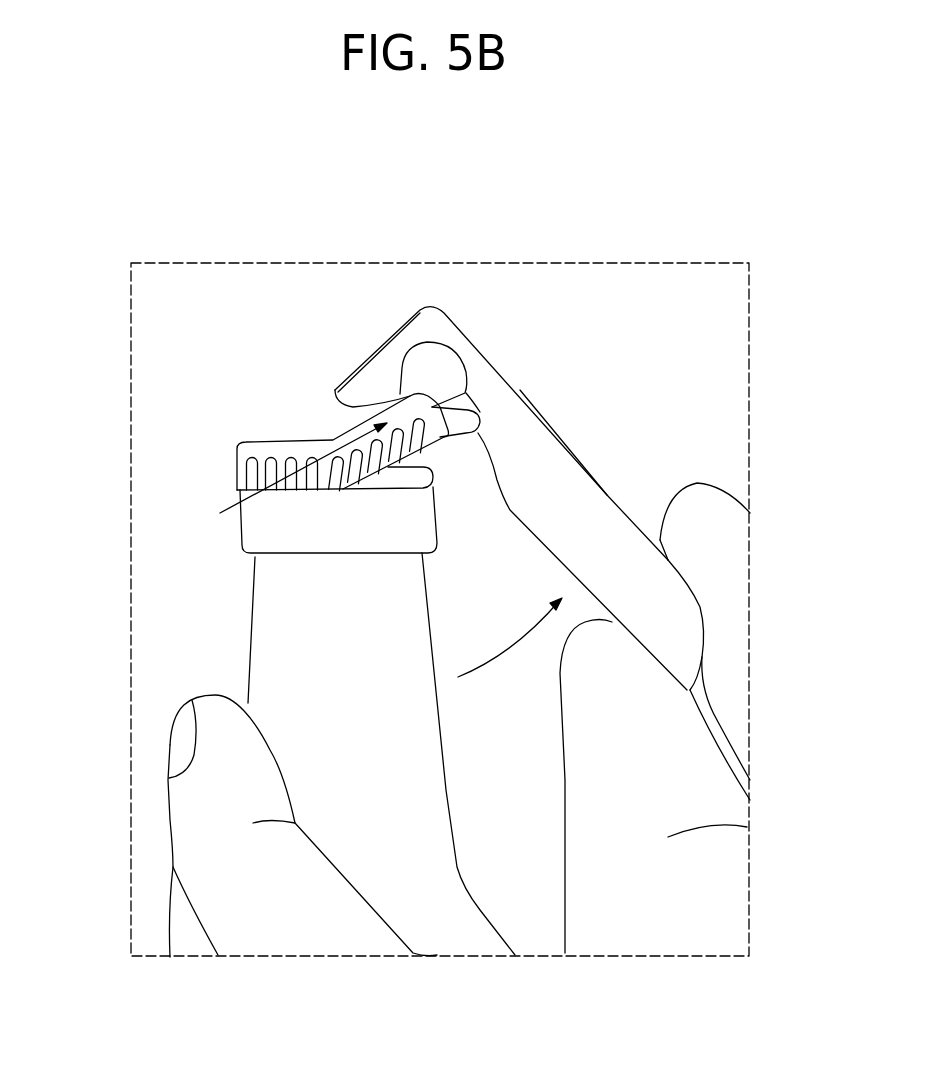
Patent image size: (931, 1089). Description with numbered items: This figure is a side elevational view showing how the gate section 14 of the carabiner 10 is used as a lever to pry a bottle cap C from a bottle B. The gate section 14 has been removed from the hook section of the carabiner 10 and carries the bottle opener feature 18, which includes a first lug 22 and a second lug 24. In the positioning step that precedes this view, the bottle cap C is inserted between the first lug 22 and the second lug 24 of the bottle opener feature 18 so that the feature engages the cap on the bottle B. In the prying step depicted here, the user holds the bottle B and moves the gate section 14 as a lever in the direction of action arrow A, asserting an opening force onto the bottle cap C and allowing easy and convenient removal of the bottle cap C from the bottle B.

The carabiner 10 is at (597, 387).
The gate section 14 is at (607, 495).
The bottle opener feature 18 is at (243, 500).
The first lug 22 is at (373, 388).
The second lug 24 is at (453, 452).
The action arrow A is at (503, 660).
The bottle B is at (297, 623).
The bottle cap C is at (300, 450).